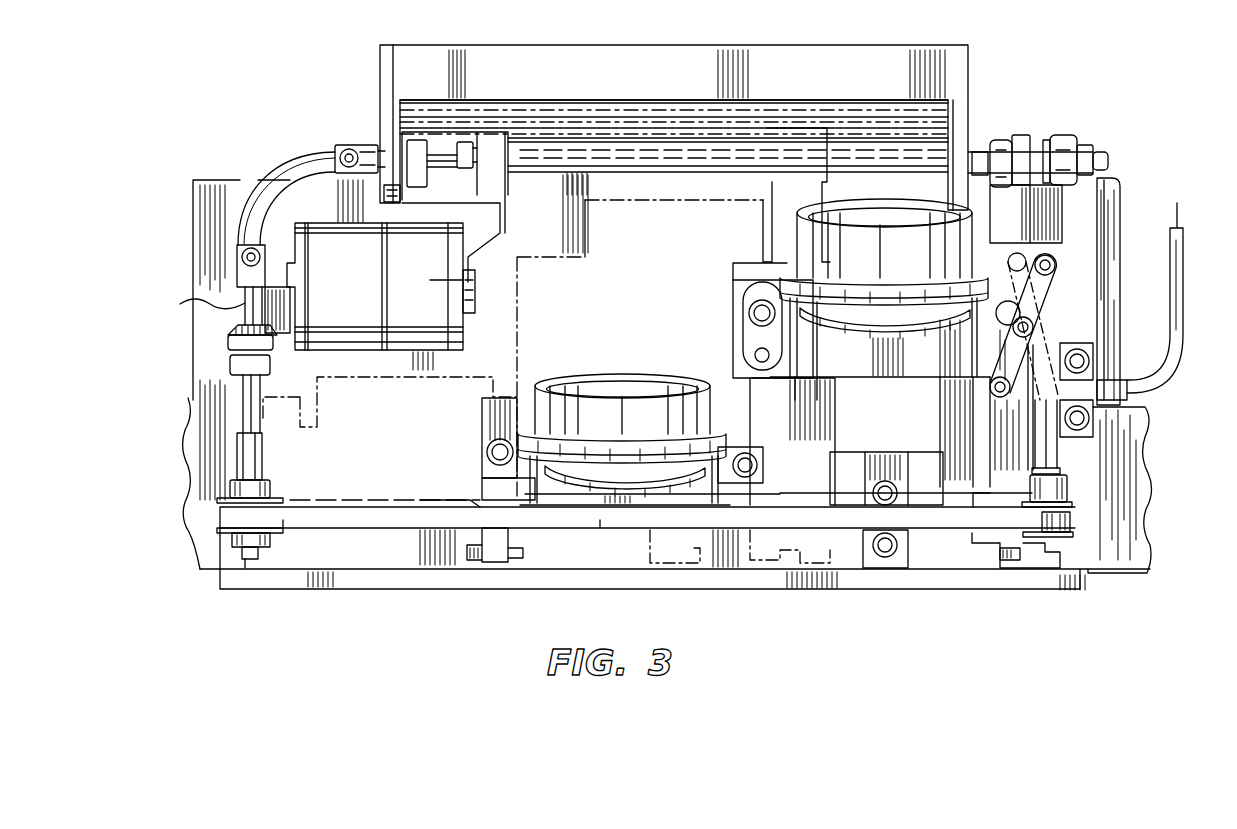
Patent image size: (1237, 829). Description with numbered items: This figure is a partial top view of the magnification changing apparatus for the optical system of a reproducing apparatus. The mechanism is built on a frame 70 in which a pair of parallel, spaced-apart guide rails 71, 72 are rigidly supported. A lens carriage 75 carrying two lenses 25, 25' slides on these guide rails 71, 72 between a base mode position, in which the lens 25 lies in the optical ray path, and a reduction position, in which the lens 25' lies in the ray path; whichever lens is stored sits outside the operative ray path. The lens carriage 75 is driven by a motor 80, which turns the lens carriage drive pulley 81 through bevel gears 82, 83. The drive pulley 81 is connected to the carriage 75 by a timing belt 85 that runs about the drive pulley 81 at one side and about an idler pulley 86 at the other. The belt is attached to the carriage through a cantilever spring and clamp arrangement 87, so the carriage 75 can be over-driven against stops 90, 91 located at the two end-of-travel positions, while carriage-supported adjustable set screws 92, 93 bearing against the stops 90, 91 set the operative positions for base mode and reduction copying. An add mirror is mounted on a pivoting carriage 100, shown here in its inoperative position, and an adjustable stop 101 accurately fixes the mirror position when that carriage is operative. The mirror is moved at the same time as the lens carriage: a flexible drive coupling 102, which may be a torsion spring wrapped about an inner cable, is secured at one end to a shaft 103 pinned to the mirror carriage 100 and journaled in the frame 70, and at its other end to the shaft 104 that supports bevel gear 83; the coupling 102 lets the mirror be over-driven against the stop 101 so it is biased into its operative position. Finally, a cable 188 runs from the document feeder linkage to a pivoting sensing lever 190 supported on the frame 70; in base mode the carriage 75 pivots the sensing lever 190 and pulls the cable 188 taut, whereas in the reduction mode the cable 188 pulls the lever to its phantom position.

The pivoting carriage 100 is at (862, 52).
The guide rail 71 is at (542, 169).
The frame 70 is at (1097, 178).
The adjustable stop 101 is at (402, 195).
The shaft 103 is at (442, 170).
The flexible drive coupling 102 is at (290, 168).
The shaft 104 is at (235, 300).
The cable 188 is at (1180, 219).
The pivoting sensing lever 190 is at (1060, 282).
The lens 25' is at (880, 339).
The lens 25 is at (622, 422).
The lens carriage 75 is at (744, 283).
The bevel gear 82 is at (393, 264).
The motor 80 is at (462, 345).
The bevel gear 83 is at (235, 330).
The lens carriage drive pulley 81 is at (226, 538).
The stop 91 is at (258, 562).
The timing belt 85 is at (398, 519).
The adjustable set screw 93 is at (1003, 572).
The adjustable set screw 92 is at (523, 553).
The guide rail 72 is at (953, 502).
The cantilever spring and clamp arrangement 87 is at (871, 563).
The idler pulley 86 is at (1070, 502).
The stop 90 is at (1065, 549).